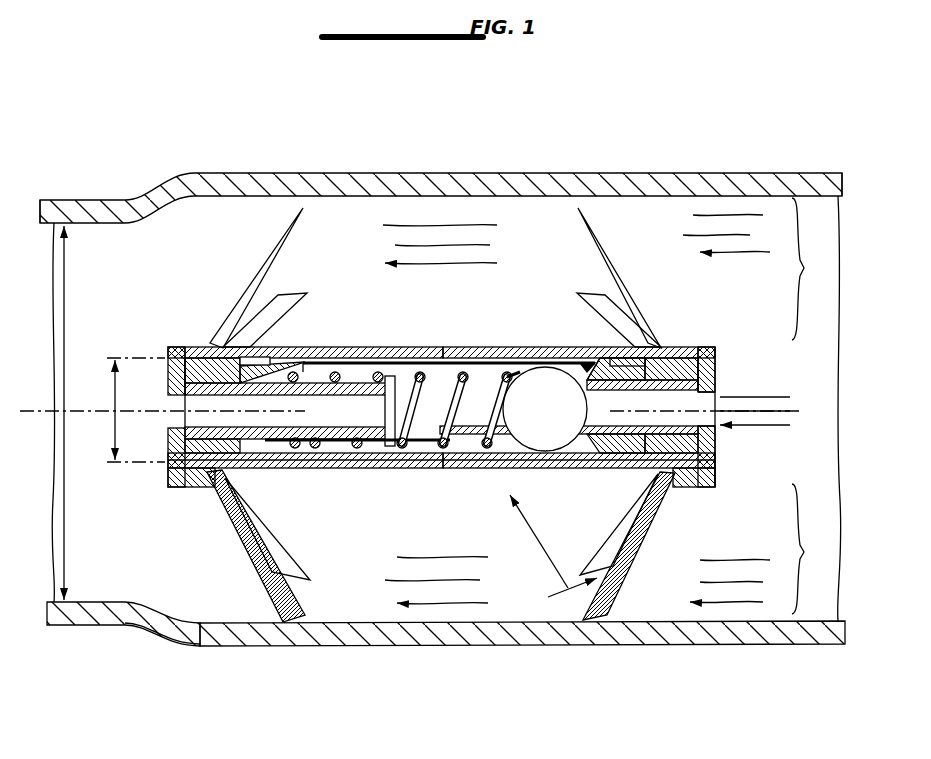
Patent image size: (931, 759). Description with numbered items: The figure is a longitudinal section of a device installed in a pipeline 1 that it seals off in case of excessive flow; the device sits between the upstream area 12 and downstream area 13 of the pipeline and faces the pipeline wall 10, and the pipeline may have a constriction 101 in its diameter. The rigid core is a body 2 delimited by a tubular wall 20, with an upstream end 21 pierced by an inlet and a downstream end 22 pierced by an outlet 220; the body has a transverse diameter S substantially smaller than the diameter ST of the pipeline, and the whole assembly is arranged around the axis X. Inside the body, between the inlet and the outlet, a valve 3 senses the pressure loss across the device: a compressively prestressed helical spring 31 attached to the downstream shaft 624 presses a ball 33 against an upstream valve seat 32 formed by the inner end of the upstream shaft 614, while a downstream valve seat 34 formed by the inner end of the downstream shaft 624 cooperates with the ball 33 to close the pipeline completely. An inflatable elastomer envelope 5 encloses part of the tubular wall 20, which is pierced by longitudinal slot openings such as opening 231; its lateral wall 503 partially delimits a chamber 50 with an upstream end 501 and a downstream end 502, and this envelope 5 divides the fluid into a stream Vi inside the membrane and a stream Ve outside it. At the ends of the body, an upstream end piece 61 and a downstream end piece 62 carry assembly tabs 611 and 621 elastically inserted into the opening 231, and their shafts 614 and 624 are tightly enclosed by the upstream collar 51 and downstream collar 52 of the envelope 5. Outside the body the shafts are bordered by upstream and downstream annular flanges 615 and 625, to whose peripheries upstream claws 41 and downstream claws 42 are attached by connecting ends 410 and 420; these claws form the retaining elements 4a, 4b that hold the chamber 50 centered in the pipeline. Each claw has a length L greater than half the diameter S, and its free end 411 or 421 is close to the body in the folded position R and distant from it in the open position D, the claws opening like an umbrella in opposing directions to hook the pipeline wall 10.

The pipeline 1 is at (377, 160).
The wall of the pipeline 10 is at (465, 197).
The upstream area of the pipeline 12 is at (732, 610).
The downstream area of the pipeline 13 is at (92, 570).
The constriction 101 is at (128, 618).
The body 2 is at (356, 470).
The tubular wall 20 is at (409, 465).
The upstream end of the body 21 is at (642, 455).
The downstream end of the body 22 is at (272, 447).
The outlet 220 is at (185, 400).
The valve 3 is at (481, 386).
The helical spring 31 is at (330, 376).
The upstream valve seat 32 is at (535, 368).
The ball 33 is at (525, 428).
The downstream valve seat 34 is at (390, 372).
The opening 231 is at (495, 383).
The upstream claw 41 is at (629, 260).
The connecting end 410 is at (667, 348).
The free end of the upstream claw 411 is at (606, 215).
The downstream claw 42 is at (246, 276).
The connecting end 420 is at (215, 350).
The free end of the downstream claw 421 is at (283, 222).
The retaining element 4a is at (578, 267).
The retaining element 4b is at (285, 268).
The envelope 5 is at (365, 470).
The chamber 50 is at (350, 372).
The upstream end of the chamber 501 is at (615, 432).
The downstream end of the chamber 502 is at (332, 452).
The lateral wall 503 is at (483, 360).
The upstream collar 51 is at (700, 348).
The downstream collar 52 is at (192, 348).
The upstream end piece 61 is at (718, 347).
The assembly tab 611 is at (600, 362).
The upstream shaft 614 is at (615, 445).
The upstream annular flange 615 is at (717, 370).
The downstream end piece 62 is at (166, 346).
The assembly tab 621 is at (275, 357).
The downstream shaft 624 is at (336, 445).
The downstream annular flange 625 is at (170, 478).
The stream outside the membrane Ve is at (756, 406).
The stream inside the membrane Vi is at (770, 411).
The axis X is at (50, 411).
The transverse diameter of the body S is at (108, 404).
The diameter of the pipeline ST is at (82, 373).
The length of the claws L is at (268, 565).
The folded position R is at (530, 528).
The open position D is at (572, 601).